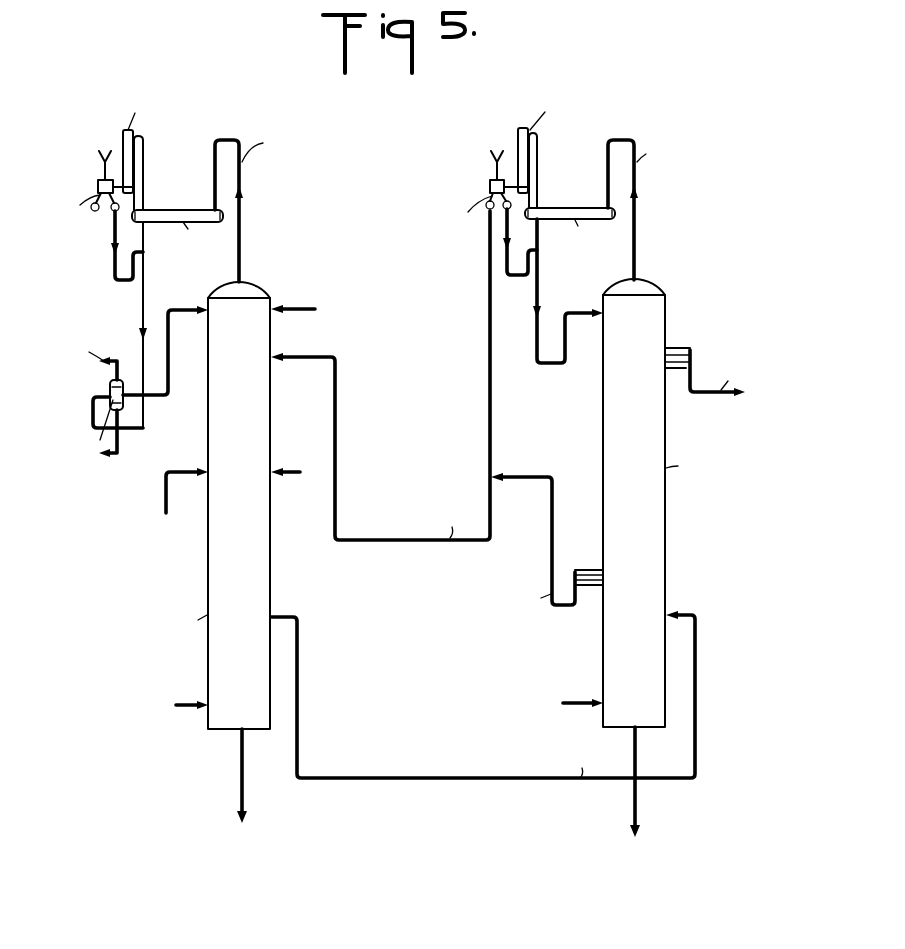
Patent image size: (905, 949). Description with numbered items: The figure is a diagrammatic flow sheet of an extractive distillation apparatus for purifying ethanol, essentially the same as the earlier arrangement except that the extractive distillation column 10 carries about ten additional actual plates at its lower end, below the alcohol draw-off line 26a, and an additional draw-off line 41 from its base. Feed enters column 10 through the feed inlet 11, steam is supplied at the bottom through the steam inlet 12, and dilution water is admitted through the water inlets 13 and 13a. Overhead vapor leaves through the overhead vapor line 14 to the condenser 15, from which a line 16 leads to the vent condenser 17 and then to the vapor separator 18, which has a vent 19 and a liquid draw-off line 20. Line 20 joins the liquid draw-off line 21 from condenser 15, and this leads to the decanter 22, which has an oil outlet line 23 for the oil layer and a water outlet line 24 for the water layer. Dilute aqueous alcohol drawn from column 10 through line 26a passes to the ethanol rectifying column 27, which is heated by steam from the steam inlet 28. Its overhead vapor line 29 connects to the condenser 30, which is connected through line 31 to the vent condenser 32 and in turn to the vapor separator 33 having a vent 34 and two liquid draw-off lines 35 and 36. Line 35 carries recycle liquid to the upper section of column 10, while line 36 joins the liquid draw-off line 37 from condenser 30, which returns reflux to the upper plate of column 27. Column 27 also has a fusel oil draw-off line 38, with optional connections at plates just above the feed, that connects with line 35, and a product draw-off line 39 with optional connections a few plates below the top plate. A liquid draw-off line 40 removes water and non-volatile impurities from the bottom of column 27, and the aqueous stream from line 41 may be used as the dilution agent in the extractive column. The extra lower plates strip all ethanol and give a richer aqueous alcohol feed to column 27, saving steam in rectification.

The extractive distillation column 10 is at (271, 545).
The feed inlet 11 is at (185, 468).
The steam inlet 12 is at (188, 697).
The water inlet 13 is at (300, 309).
The water inlet 13a is at (297, 468).
The overhead vapor line 14 is at (241, 222).
The condenser 15 is at (180, 210).
The line 16 is at (144, 160).
The vent condenser 17 is at (123, 137).
The vapor separator 18 is at (97, 187).
The vent 19 is at (104, 170).
The liquid draw-off line 20 is at (112, 243).
The liquid draw-off line 21 is at (144, 262).
The decanter 22 is at (110, 397).
The oil outlet line 23 is at (121, 368).
The water outlet line 24 is at (119, 441).
The alcohol draw-off line 26a is at (300, 655).
The ethanol rectifying column 27 is at (666, 535).
The steam inlet 28 is at (575, 697).
The overhead vapor line 29 is at (636, 216).
The condenser 30 is at (570, 208).
The line 31 is at (538, 160).
The vent condenser 32 is at (518, 134).
The vapor separator 33 is at (489, 188).
The vent 34 is at (496, 170).
The liquid draw-off line 35 is at (322, 350).
The liquid draw-off line 36 is at (524, 236).
The liquid draw-off line 37 is at (539, 258).
The fusel oil draw-off line 38 is at (550, 561).
The product draw-off line 39 is at (712, 393).
The liquid draw-off line 40 is at (637, 750).
The draw-off line 41 is at (240, 777).